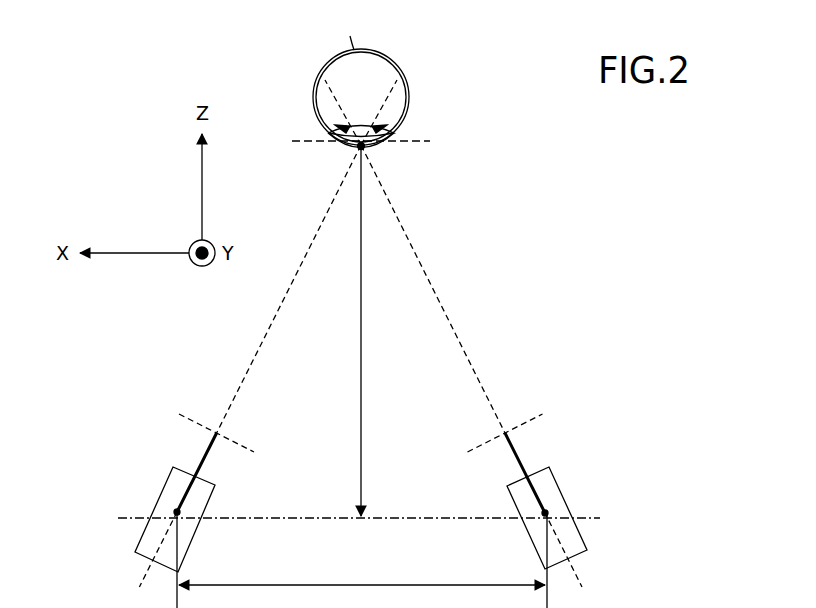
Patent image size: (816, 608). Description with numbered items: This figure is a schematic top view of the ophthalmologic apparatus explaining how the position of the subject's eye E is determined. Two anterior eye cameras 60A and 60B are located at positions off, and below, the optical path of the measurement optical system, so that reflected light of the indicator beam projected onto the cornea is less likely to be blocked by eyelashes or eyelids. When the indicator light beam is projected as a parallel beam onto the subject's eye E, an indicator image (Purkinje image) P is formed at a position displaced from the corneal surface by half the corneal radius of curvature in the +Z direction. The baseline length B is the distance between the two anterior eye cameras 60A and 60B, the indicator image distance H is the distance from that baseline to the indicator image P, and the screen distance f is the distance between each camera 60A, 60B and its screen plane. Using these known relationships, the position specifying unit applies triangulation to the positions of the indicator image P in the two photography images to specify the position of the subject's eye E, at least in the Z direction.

The subject's eye E is at (405, 80).
The indicator image P is at (366, 151).
The anterior eye camera 60A is at (557, 484).
The anterior eye camera 60B is at (160, 485).
The screen distance f is at (359, 446).
The indicator image distance H is at (374, 333).
The baseline length B is at (362, 570).